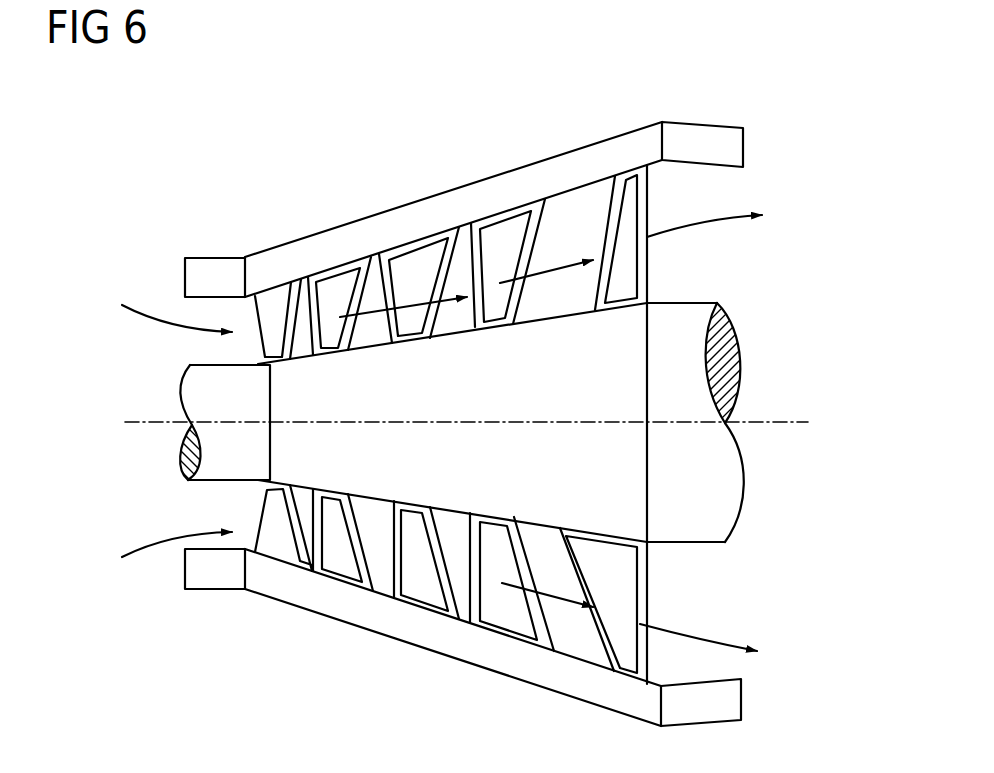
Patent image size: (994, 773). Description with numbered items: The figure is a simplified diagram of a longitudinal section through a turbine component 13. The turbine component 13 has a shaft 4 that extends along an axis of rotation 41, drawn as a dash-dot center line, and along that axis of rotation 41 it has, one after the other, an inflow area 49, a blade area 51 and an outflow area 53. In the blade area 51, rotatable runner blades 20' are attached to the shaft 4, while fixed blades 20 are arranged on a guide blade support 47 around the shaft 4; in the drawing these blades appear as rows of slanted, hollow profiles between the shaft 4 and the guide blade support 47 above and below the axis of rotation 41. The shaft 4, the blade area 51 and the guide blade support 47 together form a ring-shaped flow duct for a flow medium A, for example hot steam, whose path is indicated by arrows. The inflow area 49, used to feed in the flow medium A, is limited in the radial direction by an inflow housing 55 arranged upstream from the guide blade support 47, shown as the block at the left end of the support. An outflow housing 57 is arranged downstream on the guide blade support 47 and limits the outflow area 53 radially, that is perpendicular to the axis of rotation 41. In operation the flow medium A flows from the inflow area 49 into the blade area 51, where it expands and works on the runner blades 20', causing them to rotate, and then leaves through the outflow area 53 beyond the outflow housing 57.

The turbine component 13 is at (155, 182).
The guide blade support 47 is at (443, 202).
The inflow housing 55 is at (212, 258).
The outflow housing 57 is at (713, 133).
The blade area 51 is at (390, 568).
The shaft 4 is at (735, 366).
The axis of rotation 41 is at (784, 425).
The fixed blades 20 is at (446, 259).
The runner blades 20' is at (446, 579).
The inflow area 49 is at (202, 317).
The outflow area 53 is at (690, 264).
The flow medium A is at (548, 270).